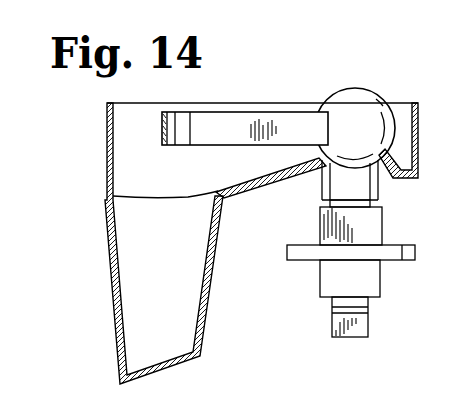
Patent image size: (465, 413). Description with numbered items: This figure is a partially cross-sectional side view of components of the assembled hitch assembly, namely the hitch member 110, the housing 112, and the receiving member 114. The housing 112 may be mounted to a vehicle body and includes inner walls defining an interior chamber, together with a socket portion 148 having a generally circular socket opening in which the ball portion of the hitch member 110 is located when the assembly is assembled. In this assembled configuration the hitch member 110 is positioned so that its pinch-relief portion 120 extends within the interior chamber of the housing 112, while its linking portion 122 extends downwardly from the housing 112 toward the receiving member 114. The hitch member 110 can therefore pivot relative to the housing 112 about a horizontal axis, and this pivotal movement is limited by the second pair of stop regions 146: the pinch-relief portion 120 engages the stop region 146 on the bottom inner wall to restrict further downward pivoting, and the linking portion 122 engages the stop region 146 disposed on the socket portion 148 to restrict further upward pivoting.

The hitch member 110 is at (362, 108).
The housing 112 is at (113, 279).
The receiving member 114 is at (393, 261).
The pinch-relief portion 120 is at (242, 138).
The linking portion 122 is at (378, 187).
The second pair of stop regions 146 is at (250, 182).
The socket portion 148 is at (324, 184).